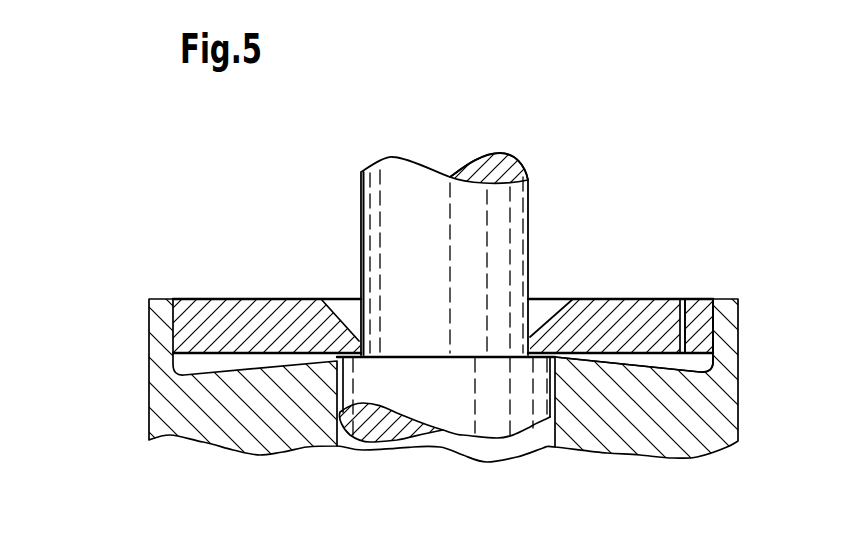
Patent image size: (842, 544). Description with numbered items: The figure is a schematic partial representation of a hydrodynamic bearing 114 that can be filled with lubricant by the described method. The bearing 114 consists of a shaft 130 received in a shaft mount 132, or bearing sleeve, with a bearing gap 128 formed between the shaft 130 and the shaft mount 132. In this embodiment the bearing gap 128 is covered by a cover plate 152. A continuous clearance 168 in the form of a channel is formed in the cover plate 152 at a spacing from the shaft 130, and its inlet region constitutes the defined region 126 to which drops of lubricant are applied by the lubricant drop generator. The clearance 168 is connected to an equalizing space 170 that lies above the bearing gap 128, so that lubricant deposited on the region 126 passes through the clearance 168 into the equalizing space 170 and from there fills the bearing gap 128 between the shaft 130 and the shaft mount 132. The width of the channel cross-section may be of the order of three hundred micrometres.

The bearing 114 is at (126, 364).
The region 126 is at (682, 305).
The bearing gap 128 is at (343, 397).
The shaft 130 is at (388, 228).
The shaft mount 132 is at (720, 415).
The cover plate 152 is at (224, 313).
The clearance 168 is at (682, 313).
The equalizing space 170 is at (697, 363).